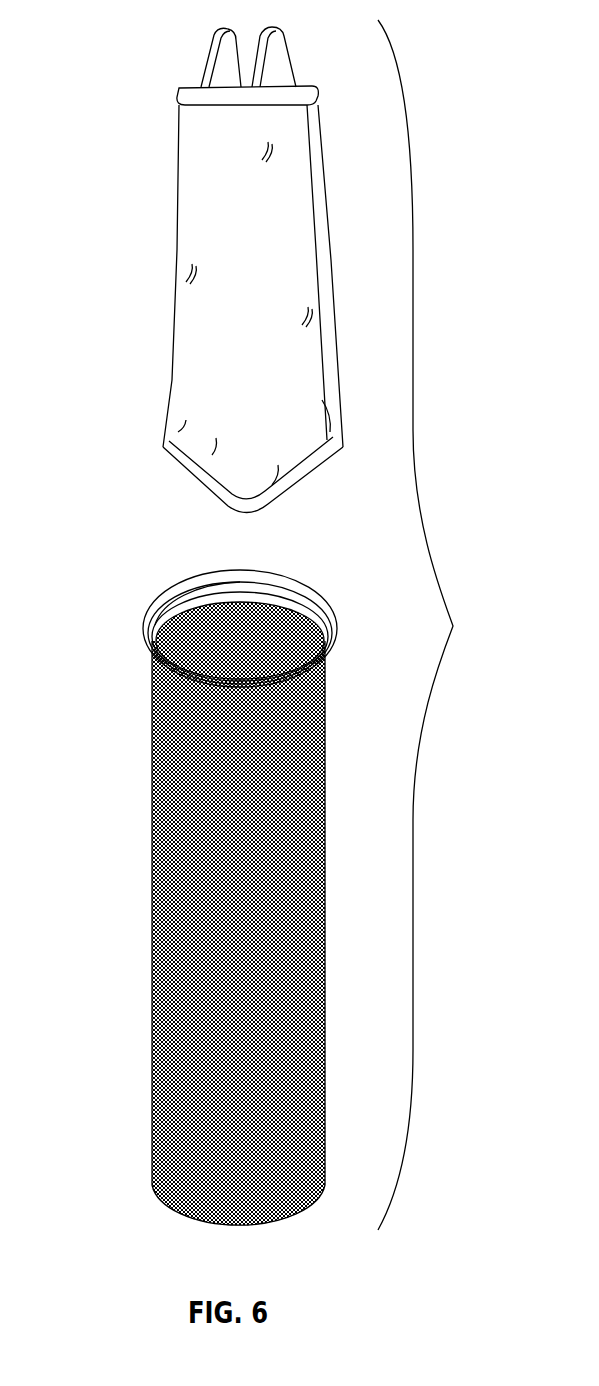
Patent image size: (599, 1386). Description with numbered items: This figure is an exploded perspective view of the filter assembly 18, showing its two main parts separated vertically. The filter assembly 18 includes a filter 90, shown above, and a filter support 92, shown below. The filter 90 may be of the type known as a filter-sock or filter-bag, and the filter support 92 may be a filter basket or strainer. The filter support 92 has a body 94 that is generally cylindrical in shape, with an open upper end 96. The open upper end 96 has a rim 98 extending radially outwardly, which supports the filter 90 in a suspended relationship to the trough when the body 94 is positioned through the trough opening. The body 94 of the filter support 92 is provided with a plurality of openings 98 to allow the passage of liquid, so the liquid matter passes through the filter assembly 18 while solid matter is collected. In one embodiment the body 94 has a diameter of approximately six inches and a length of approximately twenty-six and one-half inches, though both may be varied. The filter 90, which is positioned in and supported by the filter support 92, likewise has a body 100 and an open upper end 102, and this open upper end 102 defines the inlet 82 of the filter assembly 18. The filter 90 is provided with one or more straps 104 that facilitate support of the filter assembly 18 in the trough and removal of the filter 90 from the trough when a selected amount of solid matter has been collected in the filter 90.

The filter assembly 18 is at (436, 625).
The inlet 82 is at (237, 256).
The filter 90 is at (219, 309).
The filter support 92 is at (207, 883).
The body 94 is at (152, 1003).
The open upper end 96 is at (180, 605).
The rim 98 is at (150, 647).
The body 100 is at (175, 312).
The open upper end 102 is at (188, 84).
The straps 104 is at (228, 38).